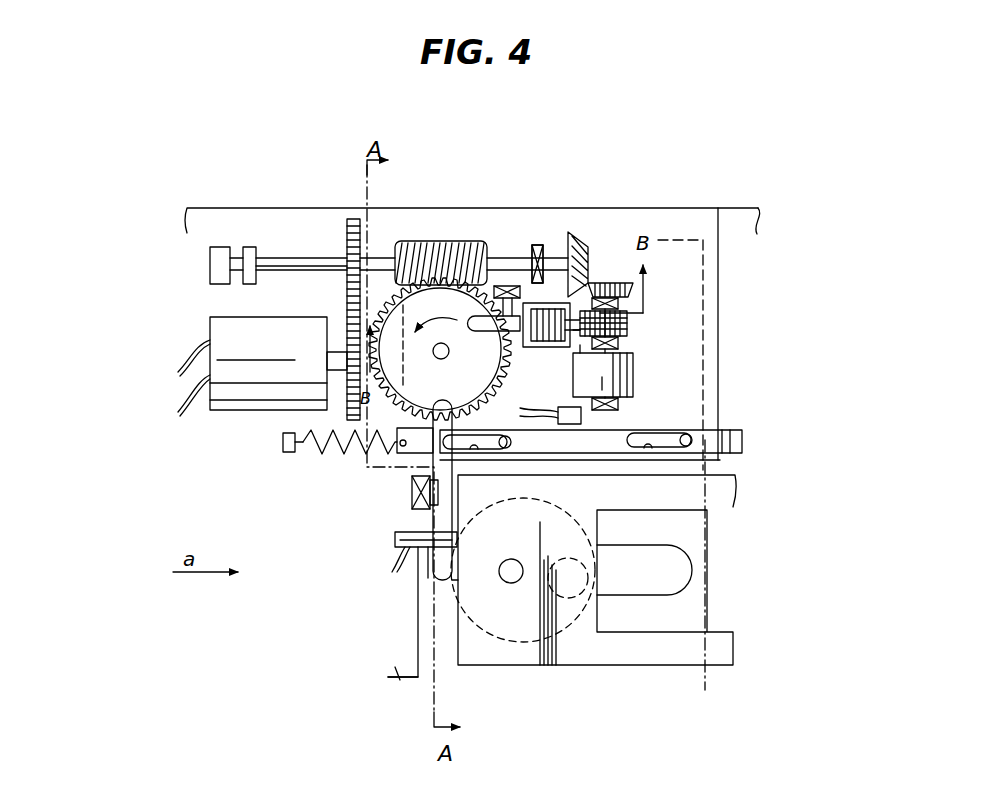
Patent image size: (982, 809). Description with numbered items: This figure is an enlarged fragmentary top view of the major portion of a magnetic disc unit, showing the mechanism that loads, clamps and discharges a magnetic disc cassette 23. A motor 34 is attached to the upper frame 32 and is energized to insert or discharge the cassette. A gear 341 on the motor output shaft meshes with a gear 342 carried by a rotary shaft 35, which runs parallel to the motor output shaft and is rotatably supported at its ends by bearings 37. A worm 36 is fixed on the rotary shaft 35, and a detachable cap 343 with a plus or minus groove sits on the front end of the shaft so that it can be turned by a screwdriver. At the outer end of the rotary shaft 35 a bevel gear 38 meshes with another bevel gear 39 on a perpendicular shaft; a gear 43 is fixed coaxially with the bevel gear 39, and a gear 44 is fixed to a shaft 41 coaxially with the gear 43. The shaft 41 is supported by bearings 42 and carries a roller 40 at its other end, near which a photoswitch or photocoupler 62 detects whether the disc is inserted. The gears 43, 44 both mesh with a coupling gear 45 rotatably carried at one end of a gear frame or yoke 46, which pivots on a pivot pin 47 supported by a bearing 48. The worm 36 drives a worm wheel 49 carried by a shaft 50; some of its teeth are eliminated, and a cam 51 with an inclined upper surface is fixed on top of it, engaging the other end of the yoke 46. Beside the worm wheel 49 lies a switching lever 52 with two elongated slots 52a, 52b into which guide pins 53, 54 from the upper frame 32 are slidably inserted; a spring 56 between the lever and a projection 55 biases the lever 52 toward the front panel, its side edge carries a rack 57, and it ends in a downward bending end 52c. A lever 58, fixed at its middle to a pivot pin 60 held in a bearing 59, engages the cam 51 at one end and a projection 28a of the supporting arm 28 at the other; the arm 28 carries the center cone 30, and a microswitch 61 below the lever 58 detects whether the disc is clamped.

The magnetic disc cassette 23 is at (660, 693).
The supporting arm 28 is at (592, 652).
The projection 28a is at (428, 583).
The center cone 30 is at (443, 590).
The upper frame 32 is at (395, 677).
The motor 34 is at (216, 320).
The gear 341 is at (347, 340).
The gear 342 is at (357, 225).
The cap 343 is at (211, 267).
The rotary shaft 35 is at (305, 257).
The worm 36 is at (440, 240).
The bearings 37 is at (247, 247).
The bevel gear 38 is at (612, 300).
The bevel gear 39 is at (628, 322).
The roller 40 is at (633, 370).
The shaft 41 is at (594, 352).
The bearings 42 is at (618, 404).
The gear 43 is at (626, 314).
The gear 44 is at (626, 330).
The coupling gear 45 is at (628, 283).
The gear frame or yoke 46 is at (572, 243).
The pivot pin 47 is at (538, 245).
The bearing 48 is at (508, 285).
The worm wheel 49 is at (408, 302).
The shaft 50 is at (449, 351).
The cam 51 is at (553, 347).
The switching lever 52 is at (742, 452).
The elongated slot 52a is at (476, 452).
The elongated slot 52b is at (650, 450).
The bending end 52c is at (742, 440).
The guide pin 53 is at (510, 448).
The guide pin 54 is at (690, 448).
The projection 55 is at (283, 442).
The spring 56 is at (303, 446).
The rack 57 is at (515, 366).
The lever 58 is at (440, 577).
The bearing 59 is at (412, 492).
The pivot pin 60 is at (432, 496).
The microswitch 61 is at (395, 538).
The photoswitch or photocoupler 62 is at (582, 416).